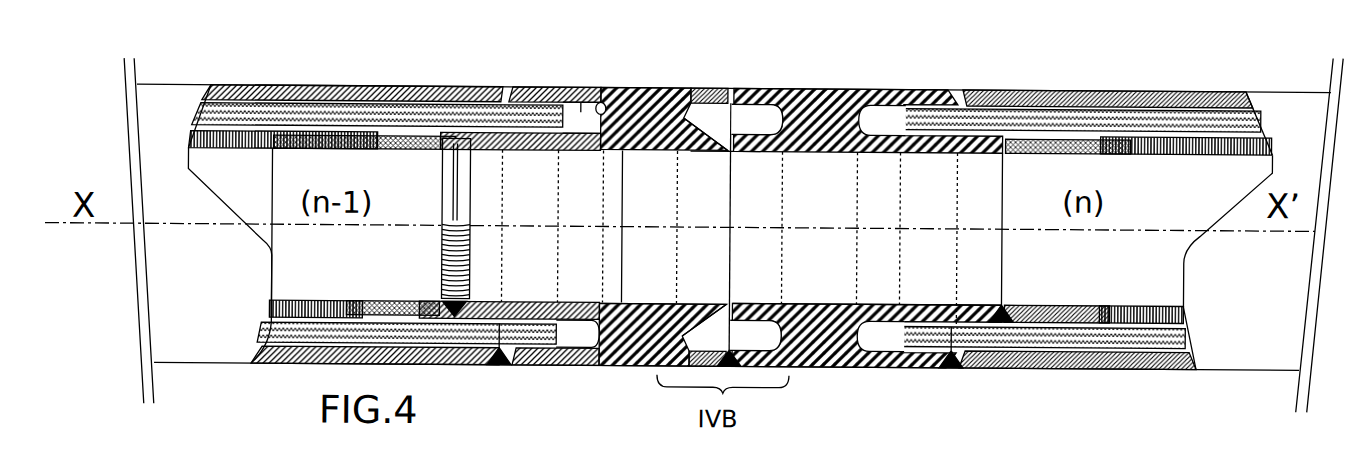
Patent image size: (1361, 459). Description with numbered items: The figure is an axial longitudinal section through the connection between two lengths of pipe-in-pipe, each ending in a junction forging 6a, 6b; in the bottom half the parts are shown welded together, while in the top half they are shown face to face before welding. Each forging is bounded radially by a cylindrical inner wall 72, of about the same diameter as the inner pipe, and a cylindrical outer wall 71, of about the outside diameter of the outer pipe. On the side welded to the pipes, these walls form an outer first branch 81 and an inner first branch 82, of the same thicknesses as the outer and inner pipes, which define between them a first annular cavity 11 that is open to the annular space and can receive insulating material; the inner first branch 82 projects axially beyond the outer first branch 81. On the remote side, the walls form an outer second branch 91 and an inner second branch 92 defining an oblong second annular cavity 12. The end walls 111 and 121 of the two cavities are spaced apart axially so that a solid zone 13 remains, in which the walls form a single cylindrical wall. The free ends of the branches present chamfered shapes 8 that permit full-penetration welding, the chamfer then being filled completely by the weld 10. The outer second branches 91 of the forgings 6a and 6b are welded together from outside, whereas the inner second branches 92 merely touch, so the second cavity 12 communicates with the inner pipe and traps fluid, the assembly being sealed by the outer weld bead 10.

The chamfered shape 8 is at (500, 90).
The outer first branch 81 is at (520, 88).
The inner first branch 82 is at (528, 152).
The first annular cavity 11 is at (580, 113).
The end wall of the first cavity 111 is at (598, 103).
The cylindrical outer wall 71 is at (630, 88).
The cylindrical inner wall 72 is at (645, 152).
The second annular cavity 12 is at (741, 88).
The end wall of the second cavity 121 is at (690, 110).
The outer second branch 91 is at (740, 108).
The inner second branch 92 is at (700, 152).
The solid zone 13 is at (272, 184).
The weld 10 is at (452, 302).
The junction forging 6a is at (632, 367).
The junction forging 6b is at (820, 368).